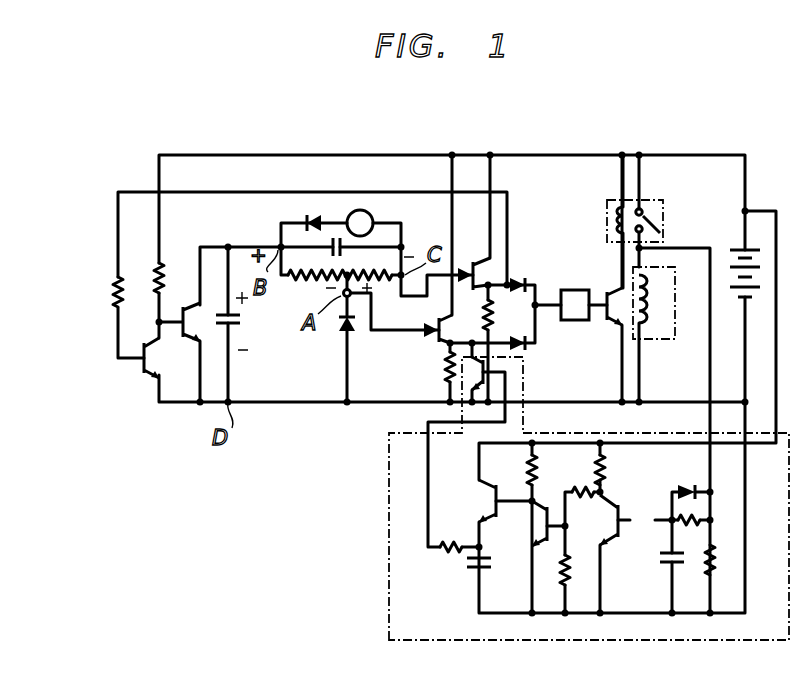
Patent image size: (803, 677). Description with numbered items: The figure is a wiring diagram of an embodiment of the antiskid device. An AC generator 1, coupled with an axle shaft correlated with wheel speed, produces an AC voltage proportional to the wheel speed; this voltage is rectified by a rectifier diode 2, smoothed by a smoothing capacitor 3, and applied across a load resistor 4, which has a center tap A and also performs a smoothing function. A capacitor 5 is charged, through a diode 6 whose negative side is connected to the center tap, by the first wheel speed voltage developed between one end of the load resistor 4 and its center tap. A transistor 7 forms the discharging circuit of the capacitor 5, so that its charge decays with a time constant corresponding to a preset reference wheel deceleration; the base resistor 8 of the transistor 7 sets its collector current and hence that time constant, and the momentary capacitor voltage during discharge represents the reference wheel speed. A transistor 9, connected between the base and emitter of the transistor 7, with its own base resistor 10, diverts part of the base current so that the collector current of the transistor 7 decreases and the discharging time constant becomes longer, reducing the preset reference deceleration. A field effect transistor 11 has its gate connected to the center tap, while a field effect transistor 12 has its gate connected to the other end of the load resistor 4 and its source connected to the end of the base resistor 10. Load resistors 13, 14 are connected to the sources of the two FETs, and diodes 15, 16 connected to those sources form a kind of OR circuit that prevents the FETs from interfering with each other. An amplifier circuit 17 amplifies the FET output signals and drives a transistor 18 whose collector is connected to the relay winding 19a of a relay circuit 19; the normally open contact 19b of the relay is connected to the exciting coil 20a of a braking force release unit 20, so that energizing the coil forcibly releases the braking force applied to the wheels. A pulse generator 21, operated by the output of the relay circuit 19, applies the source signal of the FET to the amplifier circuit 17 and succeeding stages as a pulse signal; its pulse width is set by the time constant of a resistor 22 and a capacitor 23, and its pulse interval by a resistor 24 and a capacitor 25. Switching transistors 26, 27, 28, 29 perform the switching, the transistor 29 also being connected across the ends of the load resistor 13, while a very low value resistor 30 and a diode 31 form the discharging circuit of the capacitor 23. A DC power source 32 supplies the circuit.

The AC generator 1 is at (372, 214).
The rectifier diode 2 is at (304, 218).
The smoothing capacitor 3 is at (337, 238).
The load resistor 4 is at (300, 283).
The capacitor 5 is at (226, 326).
The diode 6 is at (341, 332).
The transistor 7 is at (190, 330).
The base resistor 8 is at (152, 276).
The transistor 9 is at (149, 380).
The base resistor 10 is at (112, 288).
The field effect transistor 11 is at (428, 341).
The field effect transistor 12 is at (471, 266).
The load resistor 13 is at (444, 370).
The load resistor 14 is at (494, 308).
The diode 15 is at (518, 279).
The diode 16 is at (526, 346).
The amplifier circuit 17 is at (575, 290).
The transistor 18 is at (612, 321).
The relay circuit 19 is at (611, 201).
The relay winding 19a is at (615, 222).
The normally open contact 19b is at (654, 222).
The braking force release unit 20 is at (684, 330).
The exciting coil 20a is at (655, 324).
The pulse generator 21 is at (388, 515).
The resistor 22 is at (688, 523).
The capacitor 23 is at (667, 564).
The resistor 24 is at (442, 556).
The capacitor 25 is at (470, 566).
The switching transistor 26 is at (612, 540).
The switching transistor 27 is at (536, 526).
The switching transistor 28 is at (490, 501).
The switching transistor 29 is at (488, 379).
The resistor 30 is at (716, 556).
The diode 31 is at (688, 486).
The DC power source 32 is at (728, 258).